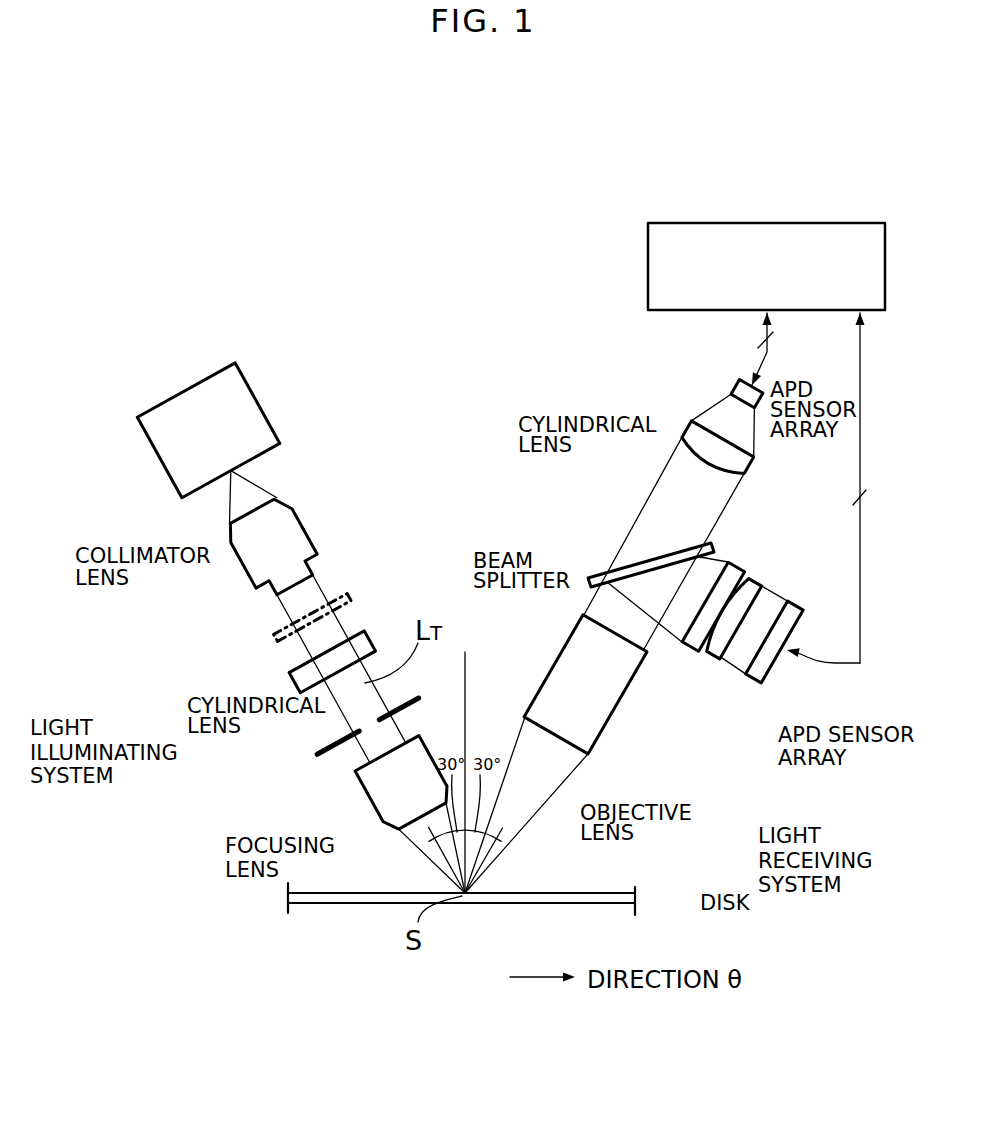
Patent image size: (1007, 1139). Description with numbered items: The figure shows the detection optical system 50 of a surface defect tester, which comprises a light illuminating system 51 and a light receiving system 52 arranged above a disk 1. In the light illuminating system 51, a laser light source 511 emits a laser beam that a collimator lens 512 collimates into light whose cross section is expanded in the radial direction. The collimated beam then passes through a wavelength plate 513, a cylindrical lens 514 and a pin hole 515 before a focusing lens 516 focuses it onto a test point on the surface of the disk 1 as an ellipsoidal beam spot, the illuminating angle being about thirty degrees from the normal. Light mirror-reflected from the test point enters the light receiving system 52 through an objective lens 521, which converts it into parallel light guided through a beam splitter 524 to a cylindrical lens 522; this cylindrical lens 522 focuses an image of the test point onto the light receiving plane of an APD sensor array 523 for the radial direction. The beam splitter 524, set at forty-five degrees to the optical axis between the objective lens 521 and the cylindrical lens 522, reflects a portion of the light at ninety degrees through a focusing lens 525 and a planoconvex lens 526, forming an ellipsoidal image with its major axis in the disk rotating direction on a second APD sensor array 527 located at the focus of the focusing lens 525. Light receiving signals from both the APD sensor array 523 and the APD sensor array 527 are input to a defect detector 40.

The disk 1 is at (613, 893).
The defect detector 40 is at (776, 222).
The detection optical system 50 is at (440, 352).
The light illuminating system 51 is at (158, 638).
The light receiving system 52 is at (714, 747).
The laser light source 511 is at (150, 441).
The collimator lens 512 is at (237, 537).
The wavelength plate 513 is at (272, 633).
The cylindrical lens 514 is at (307, 672).
The pin hole 515 is at (318, 752).
The focusing lens 516 is at (367, 802).
The objective lens 521 is at (590, 732).
The cylindrical lens 522 is at (680, 437).
The APD sensor array 523 is at (738, 388).
The beam splitter 524 is at (595, 572).
The focusing lens 525 is at (737, 562).
The planoconvex lens 526 is at (757, 582).
The APD sensor array 527 is at (765, 663).